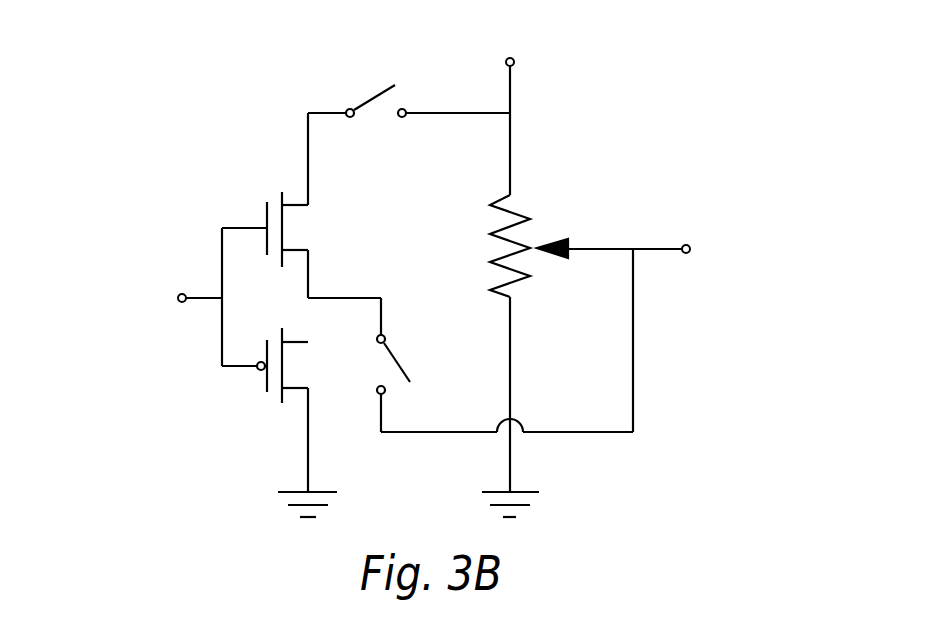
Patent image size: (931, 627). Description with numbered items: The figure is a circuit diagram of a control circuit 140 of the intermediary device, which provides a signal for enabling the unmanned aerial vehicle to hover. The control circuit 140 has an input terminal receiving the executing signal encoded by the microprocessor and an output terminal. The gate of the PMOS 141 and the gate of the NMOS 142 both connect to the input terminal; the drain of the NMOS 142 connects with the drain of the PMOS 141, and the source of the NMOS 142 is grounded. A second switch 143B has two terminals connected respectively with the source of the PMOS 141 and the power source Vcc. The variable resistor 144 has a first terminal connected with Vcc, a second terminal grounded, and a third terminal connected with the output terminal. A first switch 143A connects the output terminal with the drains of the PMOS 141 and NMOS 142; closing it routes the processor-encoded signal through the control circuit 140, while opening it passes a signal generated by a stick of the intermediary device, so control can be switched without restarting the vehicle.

The control circuit 140 is at (93, 37).
The P-type Metal-Oxide-Semiconductor Field-Effect Transistor (PMOS) 141 is at (263, 213).
The N-type Metal-Oxide-Semiconductor Field-Effect Transistor (NMOS) 142 is at (265, 380).
The first switch 143A is at (398, 353).
The second switch 143B is at (377, 95).
The variable resistor 144 is at (512, 208).